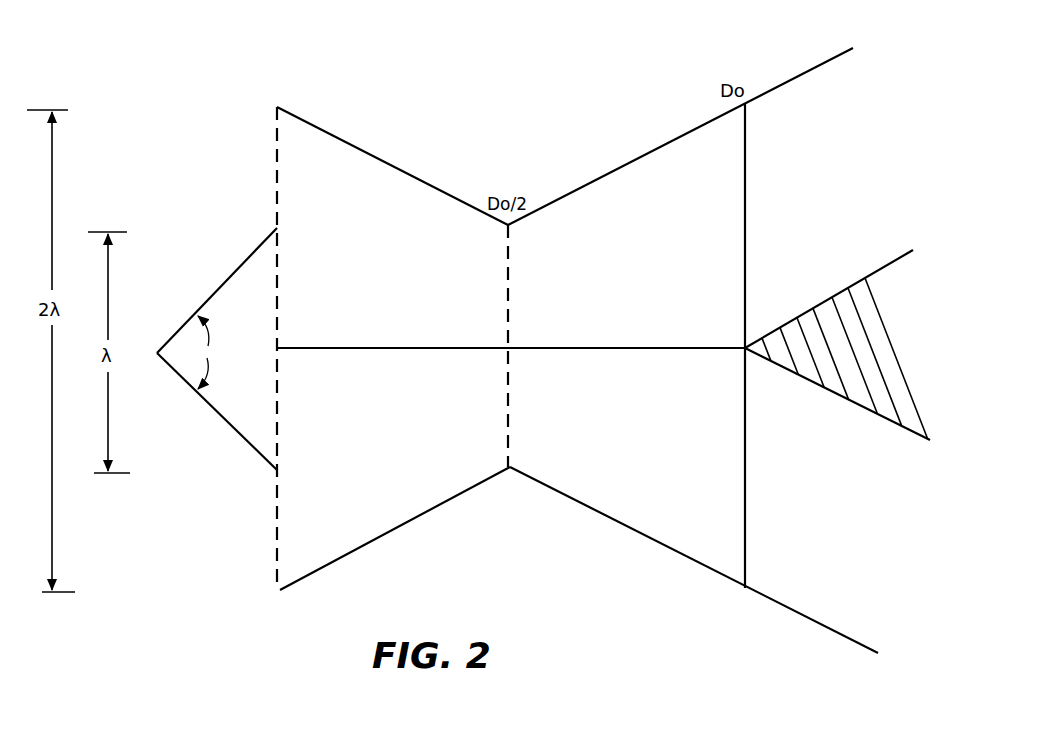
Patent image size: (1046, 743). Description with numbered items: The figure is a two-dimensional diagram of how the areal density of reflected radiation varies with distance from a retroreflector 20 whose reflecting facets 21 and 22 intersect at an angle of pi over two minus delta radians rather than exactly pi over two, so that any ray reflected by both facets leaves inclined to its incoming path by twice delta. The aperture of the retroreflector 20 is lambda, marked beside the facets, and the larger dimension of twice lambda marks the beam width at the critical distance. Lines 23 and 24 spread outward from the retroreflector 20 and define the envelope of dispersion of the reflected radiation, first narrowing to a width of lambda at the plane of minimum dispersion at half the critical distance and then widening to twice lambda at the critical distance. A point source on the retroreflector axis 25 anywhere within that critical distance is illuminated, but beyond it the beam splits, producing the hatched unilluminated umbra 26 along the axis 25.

The retroreflector 20 is at (217, 329).
The reflecting facet 21 is at (210, 296).
The reflecting facet 22 is at (229, 423).
The envelope line 23 is at (393, 166).
The envelope line 24 is at (413, 520).
The retroreflector axis 25 is at (370, 347).
The unilluminated umbra 26 is at (912, 323).